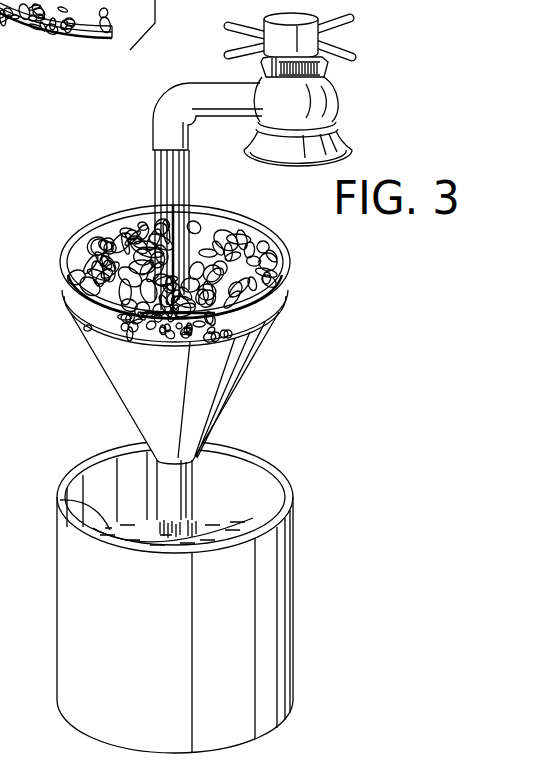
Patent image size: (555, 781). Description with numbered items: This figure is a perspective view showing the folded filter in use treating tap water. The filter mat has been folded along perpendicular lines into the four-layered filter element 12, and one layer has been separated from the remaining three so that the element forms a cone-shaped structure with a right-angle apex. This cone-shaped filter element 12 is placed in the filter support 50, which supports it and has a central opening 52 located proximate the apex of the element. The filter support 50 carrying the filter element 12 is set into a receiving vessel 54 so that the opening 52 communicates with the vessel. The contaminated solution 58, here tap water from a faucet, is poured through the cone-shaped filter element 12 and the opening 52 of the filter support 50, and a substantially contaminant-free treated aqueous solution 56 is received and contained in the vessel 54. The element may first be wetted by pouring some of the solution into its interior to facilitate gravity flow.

The four-layered filter element 12 is at (292, 262).
The filter support 50 is at (247, 368).
The central opening 52 is at (194, 508).
The receiving vessel 54 is at (270, 578).
The treated aqueous solution 56 is at (58, 501).
The contaminated solution 58 is at (190, 190).